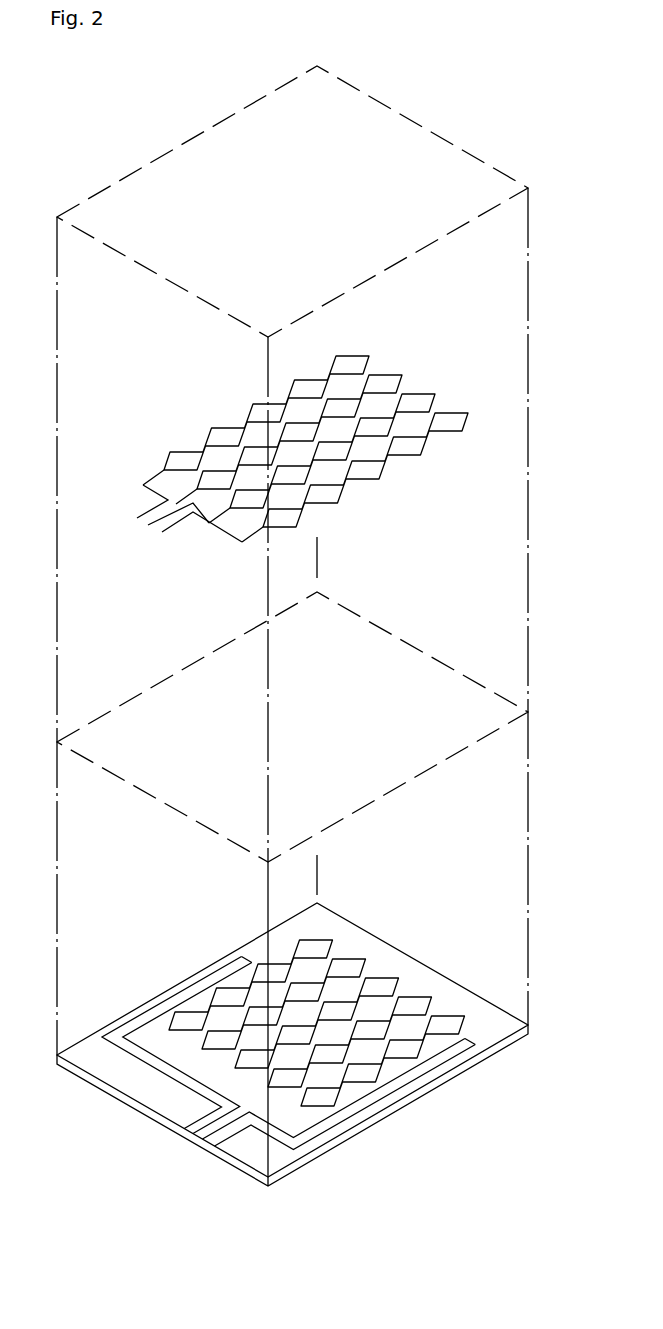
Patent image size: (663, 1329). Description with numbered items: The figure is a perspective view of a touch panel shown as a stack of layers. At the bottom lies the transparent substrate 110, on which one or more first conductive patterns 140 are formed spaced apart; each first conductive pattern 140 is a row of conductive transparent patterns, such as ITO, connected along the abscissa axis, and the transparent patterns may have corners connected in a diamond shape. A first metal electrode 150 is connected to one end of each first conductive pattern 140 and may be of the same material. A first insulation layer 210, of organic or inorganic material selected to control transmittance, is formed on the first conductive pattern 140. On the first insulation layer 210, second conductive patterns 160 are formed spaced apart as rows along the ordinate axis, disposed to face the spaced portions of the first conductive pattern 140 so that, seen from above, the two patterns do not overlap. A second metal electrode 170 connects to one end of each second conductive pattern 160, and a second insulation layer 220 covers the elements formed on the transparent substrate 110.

The transparent substrate 110 is at (418, 978).
The first conductive pattern 140 is at (308, 950).
The first metal electrode 150 is at (422, 1078).
The second conductive pattern 160 is at (457, 418).
The second metal electrode 170 is at (158, 475).
The first insulation layer 210 is at (168, 696).
The second insulation layer 220 is at (235, 132).